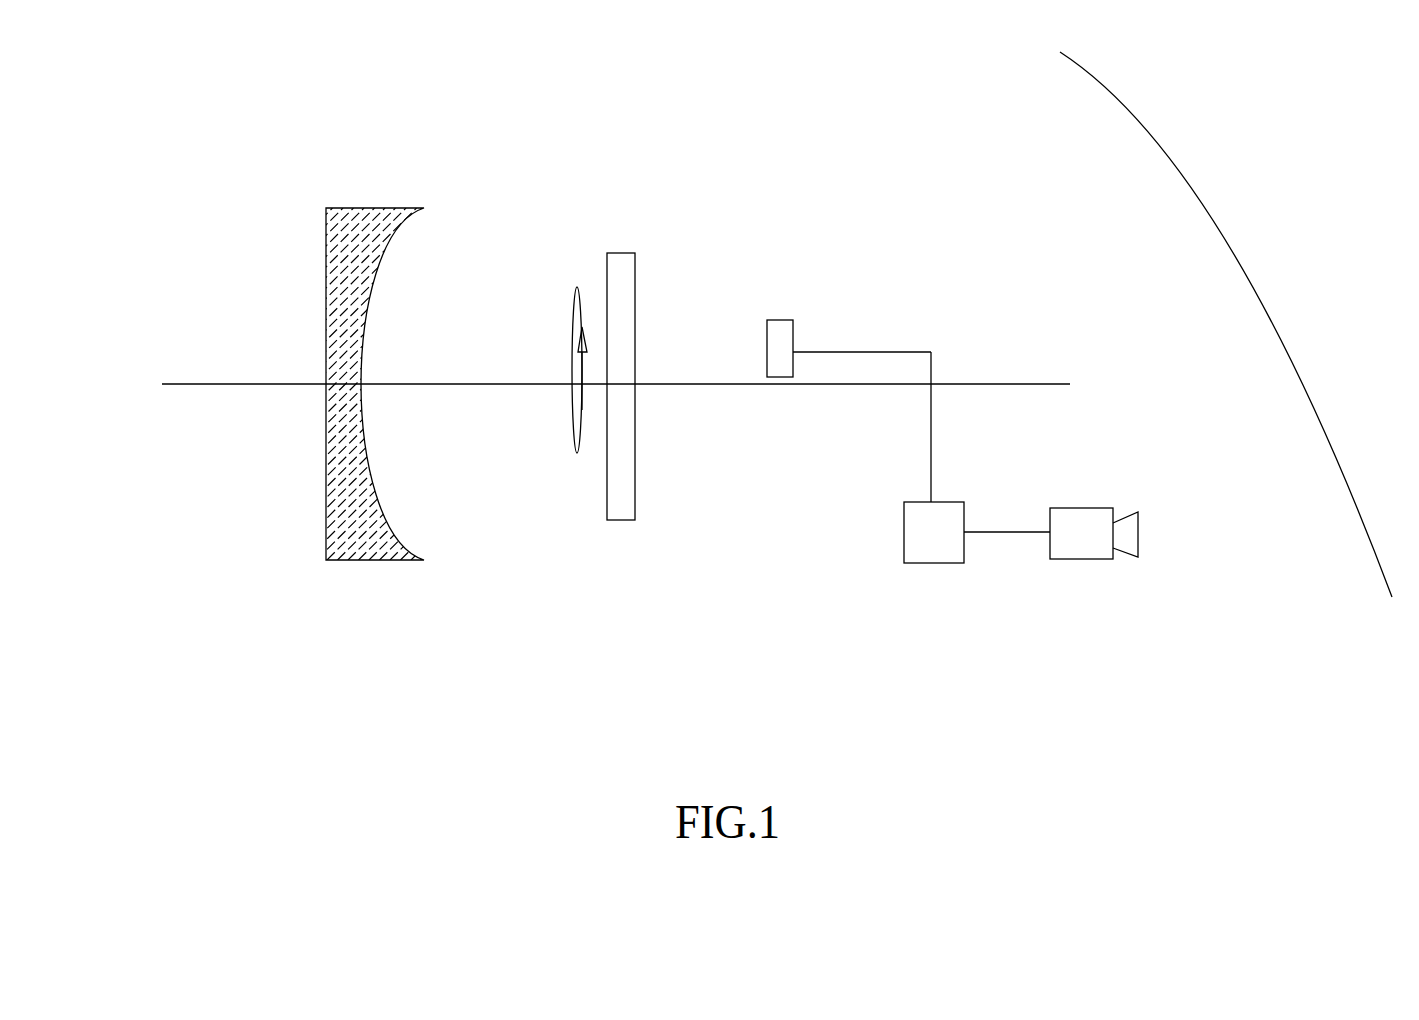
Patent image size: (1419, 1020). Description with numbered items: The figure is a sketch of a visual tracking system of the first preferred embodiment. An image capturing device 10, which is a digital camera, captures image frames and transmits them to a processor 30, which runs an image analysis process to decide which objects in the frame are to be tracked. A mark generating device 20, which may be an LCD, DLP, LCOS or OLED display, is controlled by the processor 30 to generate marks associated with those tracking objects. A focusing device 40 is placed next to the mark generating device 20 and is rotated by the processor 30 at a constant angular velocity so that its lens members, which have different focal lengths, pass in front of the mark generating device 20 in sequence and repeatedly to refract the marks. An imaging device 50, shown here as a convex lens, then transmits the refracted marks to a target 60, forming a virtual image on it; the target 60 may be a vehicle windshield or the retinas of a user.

The image capturing device 10 is at (1090, 559).
The mark generating device 20 is at (782, 320).
The processor 30 is at (937, 563).
The focusing device 40 is at (618, 253).
The imaging device 50 is at (326, 255).
The target 60 is at (1227, 243).